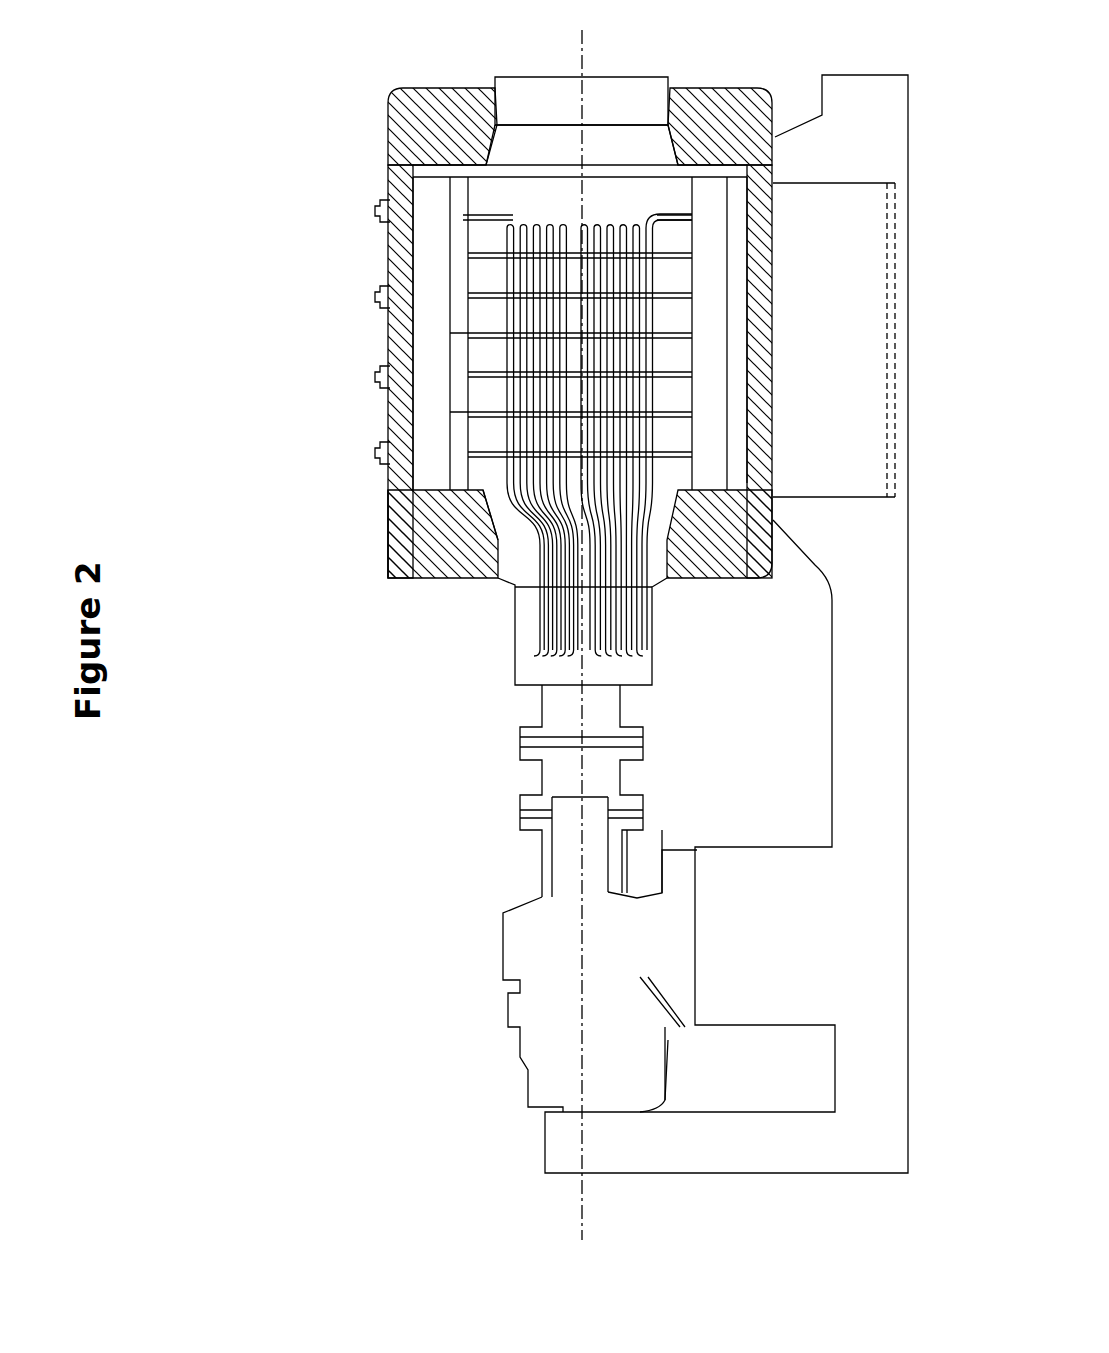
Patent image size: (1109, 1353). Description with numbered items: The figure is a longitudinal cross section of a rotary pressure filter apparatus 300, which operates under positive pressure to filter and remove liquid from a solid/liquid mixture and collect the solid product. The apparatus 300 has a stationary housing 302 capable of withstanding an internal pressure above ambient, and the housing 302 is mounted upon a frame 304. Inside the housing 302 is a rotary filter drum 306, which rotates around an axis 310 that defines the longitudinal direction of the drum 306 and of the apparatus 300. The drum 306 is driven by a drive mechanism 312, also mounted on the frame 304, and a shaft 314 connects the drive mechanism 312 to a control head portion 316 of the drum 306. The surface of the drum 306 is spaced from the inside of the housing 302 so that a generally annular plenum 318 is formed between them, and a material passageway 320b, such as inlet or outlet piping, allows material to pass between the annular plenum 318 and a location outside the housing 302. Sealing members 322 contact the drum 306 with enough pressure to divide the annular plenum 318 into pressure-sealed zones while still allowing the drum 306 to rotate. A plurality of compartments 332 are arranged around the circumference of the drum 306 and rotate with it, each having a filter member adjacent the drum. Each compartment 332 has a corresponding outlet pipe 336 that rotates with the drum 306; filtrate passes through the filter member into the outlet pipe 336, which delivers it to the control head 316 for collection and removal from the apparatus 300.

The rotary pressure filter apparatus 300 is at (402, 988).
The stationary housing 302 is at (388, 540).
The frame 304 is at (910, 732).
The rotary filter drum 306 is at (470, 540).
The axis 310 is at (590, 1205).
The drive mechanism 312 is at (503, 952).
The shaft 314 is at (542, 872).
The control head portion 316 is at (515, 682).
The annular plenum 318 is at (773, 307).
The material passageway 320b is at (375, 211).
The sealing members 322 is at (392, 580).
The compartments 332 is at (460, 232).
The outlet pipes 336 is at (648, 603).